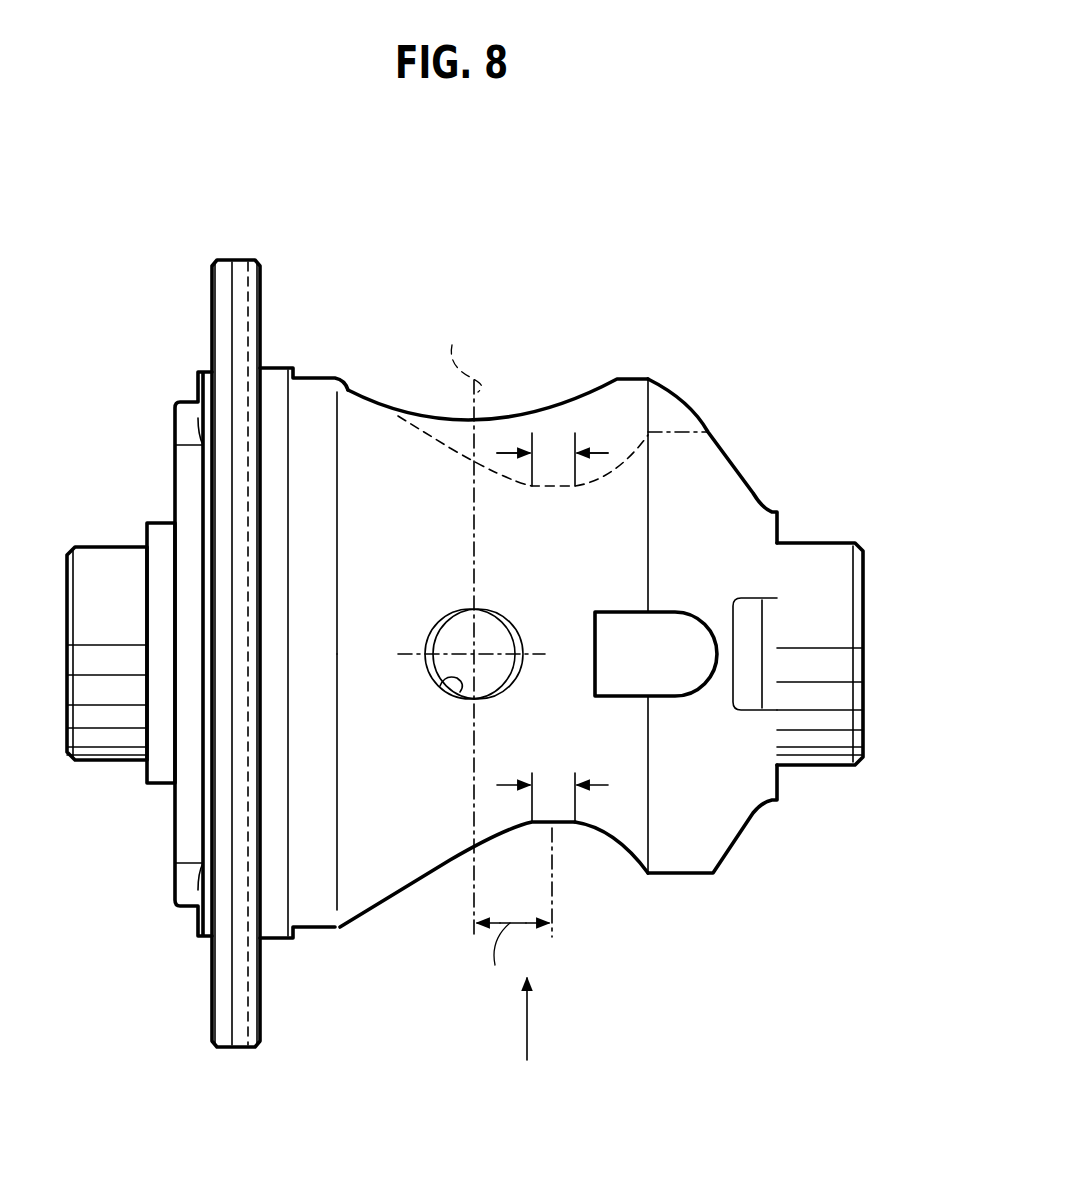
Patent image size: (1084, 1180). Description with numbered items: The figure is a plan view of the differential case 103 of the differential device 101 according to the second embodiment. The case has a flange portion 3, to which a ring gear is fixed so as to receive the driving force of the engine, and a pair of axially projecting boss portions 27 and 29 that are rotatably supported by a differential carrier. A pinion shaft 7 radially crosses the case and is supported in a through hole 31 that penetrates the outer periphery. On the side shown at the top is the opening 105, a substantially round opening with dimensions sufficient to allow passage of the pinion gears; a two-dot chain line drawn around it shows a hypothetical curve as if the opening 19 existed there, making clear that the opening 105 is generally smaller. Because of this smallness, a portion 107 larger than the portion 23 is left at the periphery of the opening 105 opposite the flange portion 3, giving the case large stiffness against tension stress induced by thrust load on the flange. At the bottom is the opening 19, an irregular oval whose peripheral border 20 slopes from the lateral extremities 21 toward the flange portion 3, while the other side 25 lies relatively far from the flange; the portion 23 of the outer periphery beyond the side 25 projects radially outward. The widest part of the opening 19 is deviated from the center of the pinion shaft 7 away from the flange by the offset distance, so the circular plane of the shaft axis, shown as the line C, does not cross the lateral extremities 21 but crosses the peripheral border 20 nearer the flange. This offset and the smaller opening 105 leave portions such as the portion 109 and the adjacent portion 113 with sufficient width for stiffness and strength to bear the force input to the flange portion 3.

The flange portion 3 is at (223, 313).
The pinion shaft 7 is at (452, 633).
The opening 19 is at (540, 488).
The peripheral border 20 is at (438, 877).
The lateral extremities 21 is at (550, 438).
The portion of the outer periphery 23 is at (720, 835).
The side of the peripheral border 25 is at (616, 862).
The boss portion 27 is at (108, 540).
The boss portion 29 is at (820, 543).
The through hole 31 is at (455, 688).
The differential device 101 is at (836, 331).
The differential case 103 is at (575, 563).
The opening 105 is at (428, 391).
The portion 107 is at (670, 413).
The portion 109 is at (410, 864).
The upper wall portion 113 is at (410, 484).